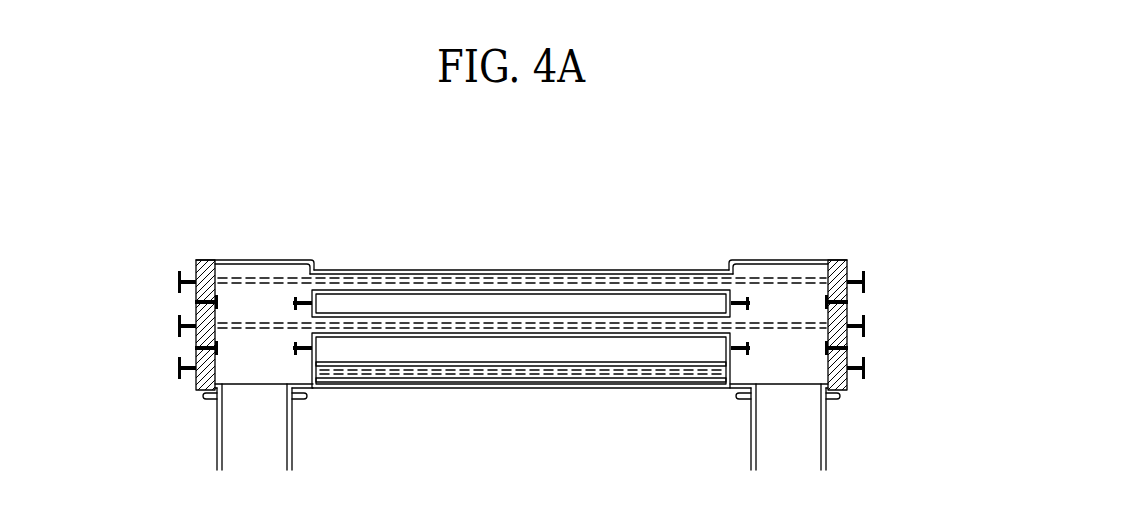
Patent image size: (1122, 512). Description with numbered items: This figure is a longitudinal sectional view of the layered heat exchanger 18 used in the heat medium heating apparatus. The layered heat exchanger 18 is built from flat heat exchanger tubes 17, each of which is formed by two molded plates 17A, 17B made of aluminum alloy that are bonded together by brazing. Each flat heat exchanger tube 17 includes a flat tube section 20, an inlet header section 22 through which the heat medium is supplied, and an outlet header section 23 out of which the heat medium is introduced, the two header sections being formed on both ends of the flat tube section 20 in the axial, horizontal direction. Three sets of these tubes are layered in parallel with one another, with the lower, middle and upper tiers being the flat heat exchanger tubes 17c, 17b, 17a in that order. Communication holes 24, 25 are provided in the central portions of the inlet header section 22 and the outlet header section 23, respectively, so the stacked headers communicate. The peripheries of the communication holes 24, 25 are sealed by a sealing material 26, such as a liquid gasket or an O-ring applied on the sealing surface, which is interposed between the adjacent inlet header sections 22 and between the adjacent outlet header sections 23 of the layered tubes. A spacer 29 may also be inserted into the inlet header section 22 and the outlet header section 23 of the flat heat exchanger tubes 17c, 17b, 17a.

The layered heat exchanger 18 is at (566, 186).
The flat tube section 20 is at (400, 268).
The inlet header section 22 is at (254, 258).
The outlet header section 23 is at (790, 258).
The communication hole 24 is at (276, 300).
The communication hole 25 is at (772, 302).
The sealing material 26 is at (195, 301).
The spacer 29 is at (203, 262).
The flat heat exchanger tube 17 is at (522, 339).
The upper tier flat heat exchanger tube 17a is at (604, 272).
The middle tier flat heat exchanger tube 17b is at (487, 310).
The lower tier flat heat exchanger tube 17c is at (607, 388).
The molded plate 17A is at (456, 363).
The molded plate 17B is at (518, 383).